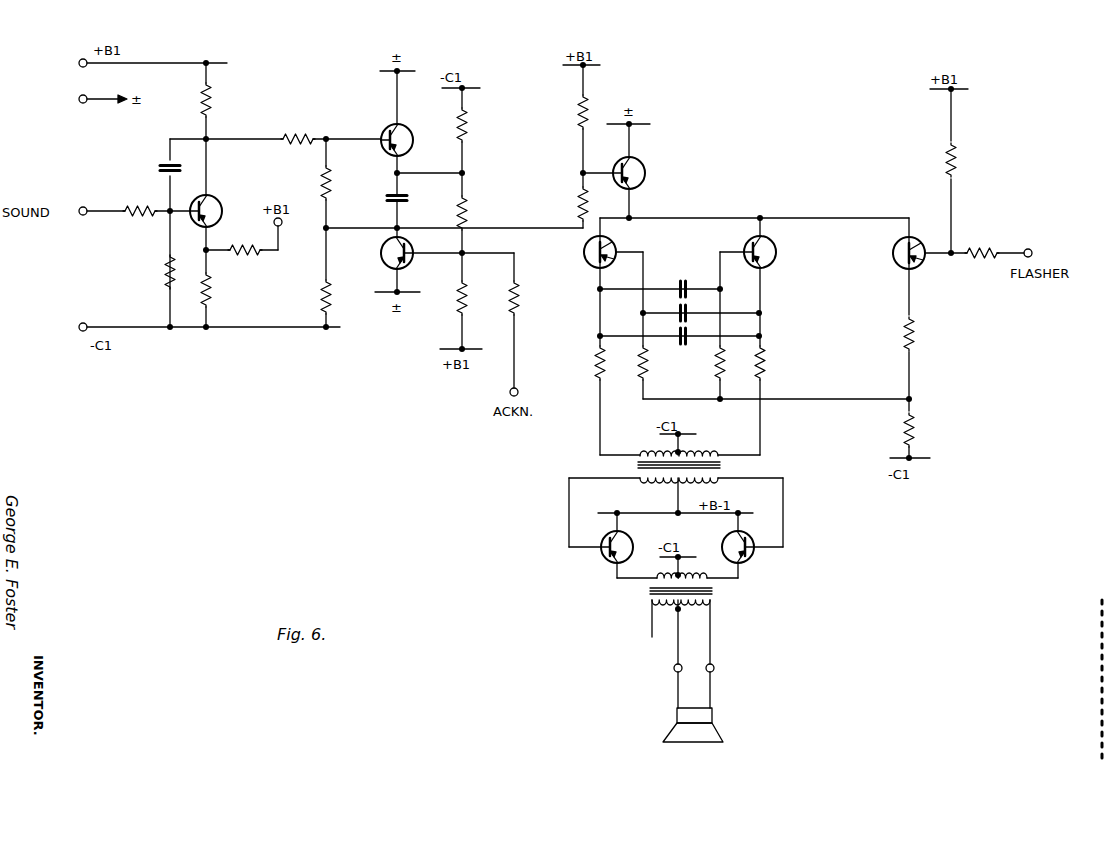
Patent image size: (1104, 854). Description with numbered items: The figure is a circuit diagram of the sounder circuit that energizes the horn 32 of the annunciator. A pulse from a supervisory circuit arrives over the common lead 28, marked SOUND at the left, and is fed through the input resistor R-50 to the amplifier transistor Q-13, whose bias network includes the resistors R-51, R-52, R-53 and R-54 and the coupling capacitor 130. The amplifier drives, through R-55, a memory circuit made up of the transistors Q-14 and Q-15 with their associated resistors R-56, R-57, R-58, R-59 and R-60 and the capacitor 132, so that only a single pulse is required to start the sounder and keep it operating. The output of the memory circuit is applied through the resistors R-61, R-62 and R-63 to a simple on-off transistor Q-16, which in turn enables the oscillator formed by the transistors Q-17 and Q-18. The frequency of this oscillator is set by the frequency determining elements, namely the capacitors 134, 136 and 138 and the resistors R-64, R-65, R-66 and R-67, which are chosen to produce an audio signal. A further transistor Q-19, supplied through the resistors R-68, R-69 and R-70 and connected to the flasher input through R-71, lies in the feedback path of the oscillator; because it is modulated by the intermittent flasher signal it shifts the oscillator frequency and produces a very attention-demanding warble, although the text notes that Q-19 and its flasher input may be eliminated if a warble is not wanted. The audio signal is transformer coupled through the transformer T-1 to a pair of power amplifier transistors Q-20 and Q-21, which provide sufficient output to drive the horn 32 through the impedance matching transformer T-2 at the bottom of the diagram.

The output channel 28 is at (98, 207).
The horn 32 is at (671, 730).
The capacitor 130 is at (165, 164).
The capacitor 132 is at (391, 195).
The frequency determining element 134 is at (676, 286).
The frequency determining element 136 is at (694, 304).
The frequency determining element 138 is at (679, 344).
The amplifier transistor Q-13 is at (218, 200).
The memory circuit transistor Q-14 is at (389, 131).
The memory circuit transistor Q-15 is at (380, 264).
The on-off transistor Q-16 is at (644, 166).
The oscillator transistor Q-17 is at (616, 246).
The oscillator transistor Q-18 is at (777, 249).
The feedback control transistor Q-19 is at (893, 262).
The power amplifier transistor Q-20 is at (604, 559).
The power amplifier transistor Q-21 is at (753, 560).
The resistor R-50 is at (136, 218).
The resistor R-51 is at (212, 100).
The resistor R-52 is at (164, 262).
The resistor R-53 is at (212, 293).
The resistor R-54 is at (250, 258).
The resistor R-55 is at (298, 146).
The resistor R-56 is at (332, 188).
The resistor R-57 is at (320, 295).
The resistor R-58 is at (454, 298).
The resistor R-59 is at (468, 212).
The resistor R-60 is at (468, 124).
The resistor R-61 is at (577, 110).
The resistor R-62 is at (577, 199).
The resistor R-63 is at (520, 291).
The frequency determining resistor R-64 is at (595, 348).
The frequency determining resistor R-65 is at (638, 380).
The frequency determining resistor R-66 is at (714, 378).
The frequency determining resistor R-67 is at (766, 378).
The resistor R-68 is at (915, 336).
The resistor R-69 is at (915, 422).
The resistor R-70 is at (957, 158).
The resistor R-71 is at (991, 241).
The transformer T-1 is at (626, 465).
The impedance matching transformer T-2 is at (640, 601).